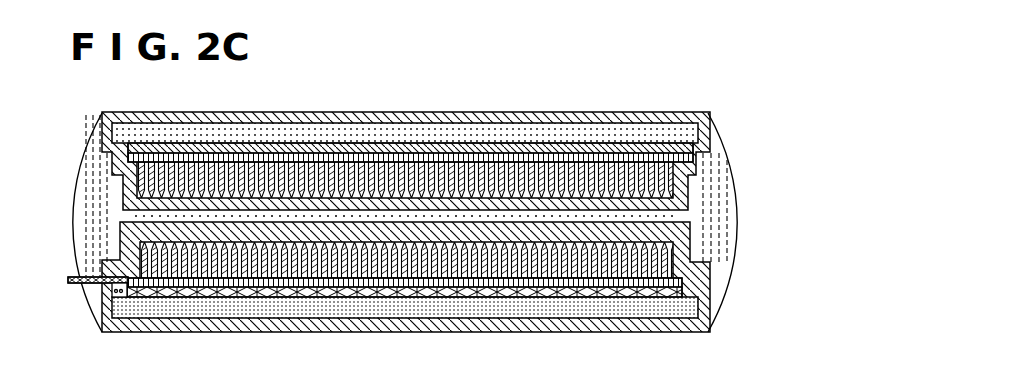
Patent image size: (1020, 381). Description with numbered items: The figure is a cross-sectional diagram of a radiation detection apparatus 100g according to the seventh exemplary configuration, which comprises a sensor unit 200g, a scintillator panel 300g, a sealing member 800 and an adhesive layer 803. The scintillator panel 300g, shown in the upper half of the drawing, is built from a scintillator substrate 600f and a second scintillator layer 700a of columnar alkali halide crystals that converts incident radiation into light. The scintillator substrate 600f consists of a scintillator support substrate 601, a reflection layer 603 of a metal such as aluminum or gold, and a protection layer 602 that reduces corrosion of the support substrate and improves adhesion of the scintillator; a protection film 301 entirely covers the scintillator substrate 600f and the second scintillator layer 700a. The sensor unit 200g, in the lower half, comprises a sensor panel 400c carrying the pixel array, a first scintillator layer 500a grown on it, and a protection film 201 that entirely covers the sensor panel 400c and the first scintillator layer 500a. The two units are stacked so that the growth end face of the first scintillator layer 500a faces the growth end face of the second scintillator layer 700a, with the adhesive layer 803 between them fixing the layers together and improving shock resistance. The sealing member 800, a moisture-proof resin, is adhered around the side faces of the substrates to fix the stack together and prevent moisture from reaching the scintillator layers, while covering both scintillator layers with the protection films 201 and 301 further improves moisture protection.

The radiation detection apparatus 100g is at (300, 101).
The sealing member 800 is at (95, 150).
The scintillator support substrate 601 is at (438, 133).
The reflection layer 603 is at (517, 149).
The protection layer 602 is at (609, 157).
The protection film 301 is at (677, 216).
The adhesive layer 803 is at (718, 140).
The scintillator substrate 600f is at (459, 108).
The second scintillator layer 700a is at (469, 128).
The scintillator panel 300g is at (500, 134).
The first scintillator layer 500a is at (740, 238).
The sensor panel 400c is at (740, 279).
The sensor unit 200g is at (500, 296).
The protection film 201 is at (708, 333).